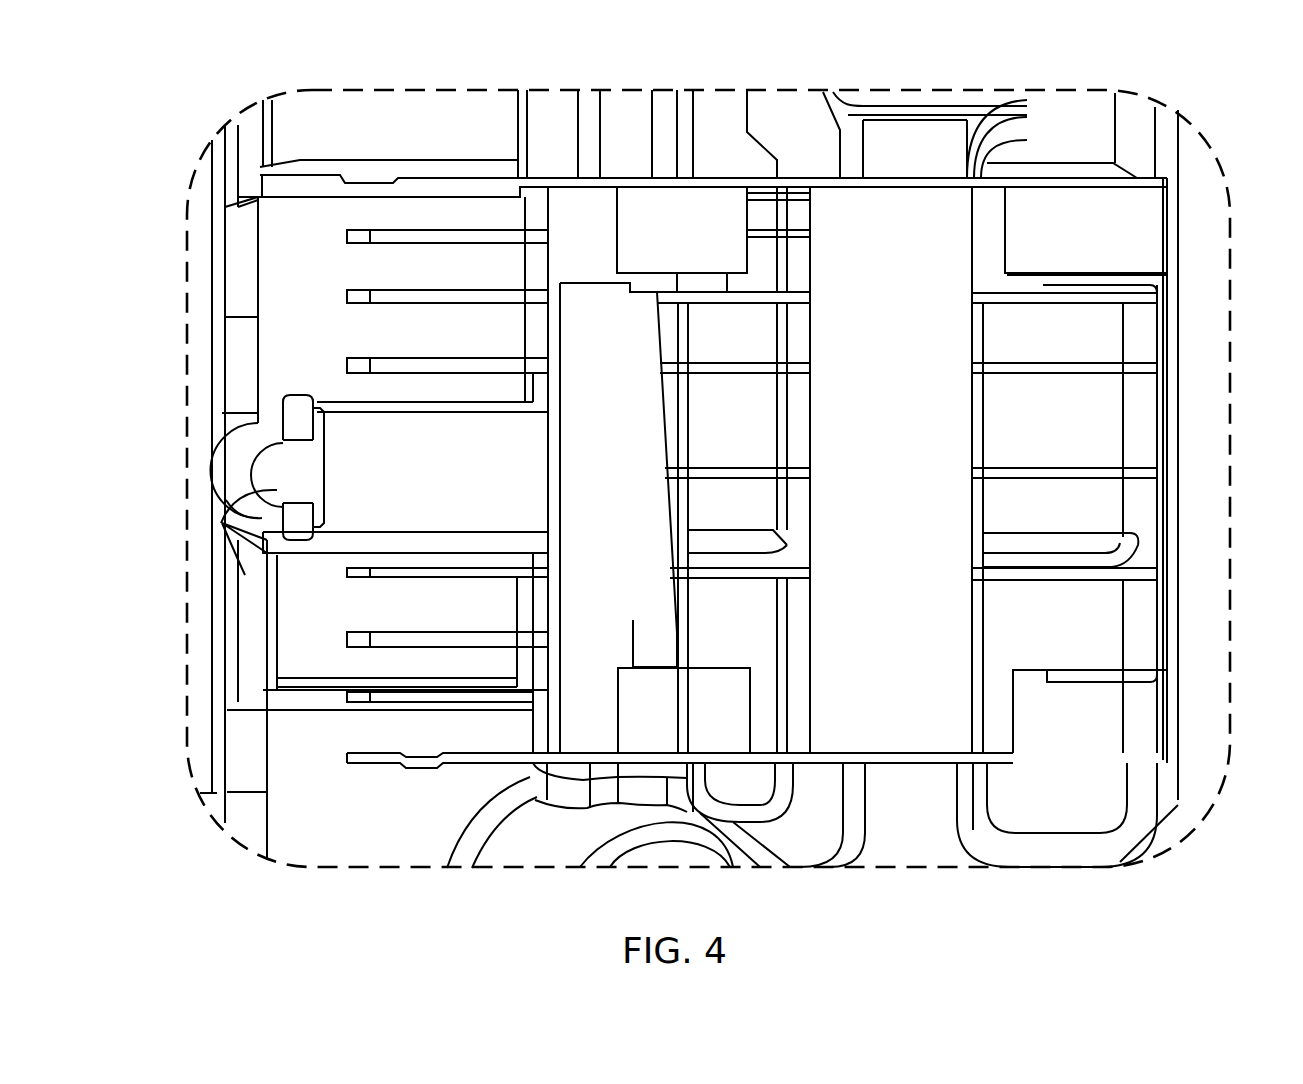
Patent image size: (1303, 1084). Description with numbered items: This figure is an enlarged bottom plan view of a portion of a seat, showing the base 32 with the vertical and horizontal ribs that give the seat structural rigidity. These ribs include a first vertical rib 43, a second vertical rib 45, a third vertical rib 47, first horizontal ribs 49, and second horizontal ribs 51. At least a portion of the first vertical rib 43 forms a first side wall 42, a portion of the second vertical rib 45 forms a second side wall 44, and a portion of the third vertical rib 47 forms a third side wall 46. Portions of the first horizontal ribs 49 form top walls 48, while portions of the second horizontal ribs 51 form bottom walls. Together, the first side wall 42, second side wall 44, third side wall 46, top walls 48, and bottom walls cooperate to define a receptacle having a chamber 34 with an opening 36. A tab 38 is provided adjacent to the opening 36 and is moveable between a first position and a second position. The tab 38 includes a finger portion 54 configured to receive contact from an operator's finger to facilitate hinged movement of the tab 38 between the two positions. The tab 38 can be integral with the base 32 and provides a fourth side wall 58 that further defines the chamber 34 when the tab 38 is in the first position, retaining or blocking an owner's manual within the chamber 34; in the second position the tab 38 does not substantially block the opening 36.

The base 32 is at (317, 138).
The chamber 34 is at (400, 608).
The opening 36 is at (338, 747).
The tab 38 is at (290, 467).
The first side wall 42 is at (593, 188).
The first vertical rib 43 is at (636, 178).
The second side wall 44 is at (597, 753).
The second vertical rib 45 is at (470, 763).
The third side wall 46 is at (1150, 408).
The third vertical rib 47 is at (1172, 585).
The top walls 48 is at (823, 398).
The first horizontal ribs 49 is at (597, 592).
The second horizontal ribs 51 is at (706, 218).
The finger portion 54 is at (221, 523).
The fourth side wall 58 is at (340, 462).